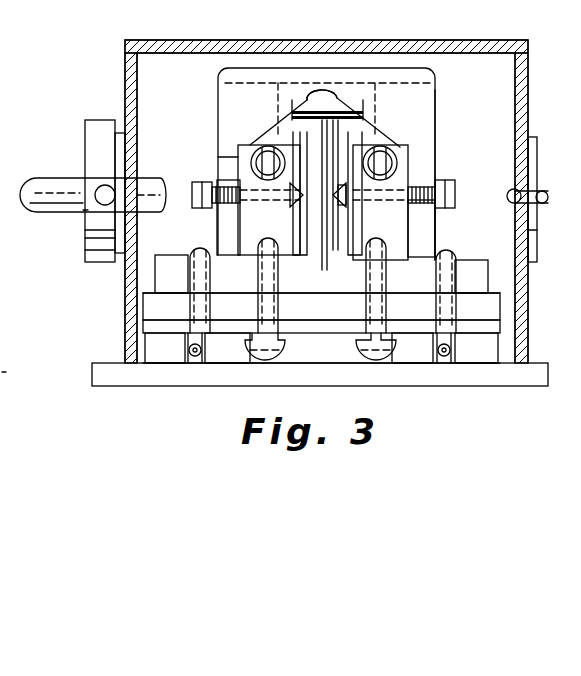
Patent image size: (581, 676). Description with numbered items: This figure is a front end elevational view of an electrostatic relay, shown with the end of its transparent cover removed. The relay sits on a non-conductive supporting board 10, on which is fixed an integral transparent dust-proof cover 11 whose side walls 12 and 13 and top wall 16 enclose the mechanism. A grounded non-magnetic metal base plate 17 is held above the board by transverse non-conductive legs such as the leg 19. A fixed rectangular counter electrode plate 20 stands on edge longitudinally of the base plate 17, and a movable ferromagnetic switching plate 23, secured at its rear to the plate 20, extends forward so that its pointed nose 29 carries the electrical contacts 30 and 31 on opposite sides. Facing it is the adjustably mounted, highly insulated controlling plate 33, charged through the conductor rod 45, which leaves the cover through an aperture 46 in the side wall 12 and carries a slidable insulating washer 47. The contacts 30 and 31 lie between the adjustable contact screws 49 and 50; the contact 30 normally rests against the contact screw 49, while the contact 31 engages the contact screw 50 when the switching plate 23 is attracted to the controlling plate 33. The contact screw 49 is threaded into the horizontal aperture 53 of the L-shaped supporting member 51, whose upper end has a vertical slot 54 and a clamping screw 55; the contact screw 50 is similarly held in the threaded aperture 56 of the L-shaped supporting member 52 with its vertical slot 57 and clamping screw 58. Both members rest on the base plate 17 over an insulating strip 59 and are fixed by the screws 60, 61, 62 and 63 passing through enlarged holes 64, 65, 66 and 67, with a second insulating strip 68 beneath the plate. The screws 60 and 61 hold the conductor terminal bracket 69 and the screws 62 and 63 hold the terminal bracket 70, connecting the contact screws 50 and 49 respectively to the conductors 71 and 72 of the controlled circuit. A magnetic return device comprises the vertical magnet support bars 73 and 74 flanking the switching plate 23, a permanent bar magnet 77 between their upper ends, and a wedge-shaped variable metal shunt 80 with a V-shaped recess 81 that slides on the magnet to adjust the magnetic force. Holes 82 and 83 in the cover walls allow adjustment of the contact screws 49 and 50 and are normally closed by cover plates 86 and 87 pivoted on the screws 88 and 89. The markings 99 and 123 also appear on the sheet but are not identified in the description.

The supporting board 10 is at (128, 368).
The transparent dust-proof cover 11 is at (324, 50).
The side wall 12 is at (137, 72).
The side wall 13 is at (515, 66).
The top wall 16 is at (374, 52).
The base plate 17 is at (155, 305).
The leg 19 is at (305, 362).
The counter electrode plate 20 is at (383, 103).
The switching plate 23 is at (322, 263).
The pointed nose 29 is at (330, 140).
The electrical contact 30 is at (330, 166).
The electrical contact 31 is at (330, 220).
The controlling plate 33 is at (280, 139).
The conductor rod 45 is at (70, 178).
The aperture 46 is at (140, 165).
The insulating washer 47 is at (98, 122).
The contact screw 49 is at (450, 182).
The contact screw 50 is at (195, 207).
The L-shaped supporting member 51 is at (470, 258).
The L-shaped supporting member 52 is at (172, 258).
The horizontal aperture 53 is at (410, 159).
The vertical slot 54 is at (431, 222).
The clamping screw 55 is at (395, 148).
The threaded aperture 56 is at (242, 181).
The vertical slot 57 is at (214, 229).
The clamping screw 58 is at (258, 149).
The strip of insulating material 59 is at (490, 297).
The screw 60 is at (180, 340).
The screw 61 is at (258, 361).
The screw 62 is at (377, 361).
The screw 63 is at (456, 340).
The enlarged hole 64 is at (208, 303).
The enlarged hole 65 is at (285, 303).
The enlarged hole 66 is at (380, 303).
The enlarged hole 67 is at (457, 303).
The second strip of insulating material 68 is at (497, 327).
The conductor terminal bracket 69 is at (219, 338).
The conductor terminal bracket 70 is at (398, 339).
The conductor 71 is at (192, 357).
The conductor 72 is at (444, 358).
The magnet support bar 73 is at (425, 151).
The magnet support bar 74 is at (222, 158).
The permanent bar magnet 77 is at (281, 105).
The magnetic variable metal shunt 80 is at (435, 99).
The V-shaped recess 81 is at (330, 93).
The hole 82 is at (540, 181).
The hole 83 is at (110, 207).
The cover plate 86 is at (537, 244).
The cover plate 87 is at (115, 147).
The screw 88 is at (550, 197).
The screw 89 is at (112, 185).
The lead 99 is at (16, 370).
The lead 123 is at (44, 213).